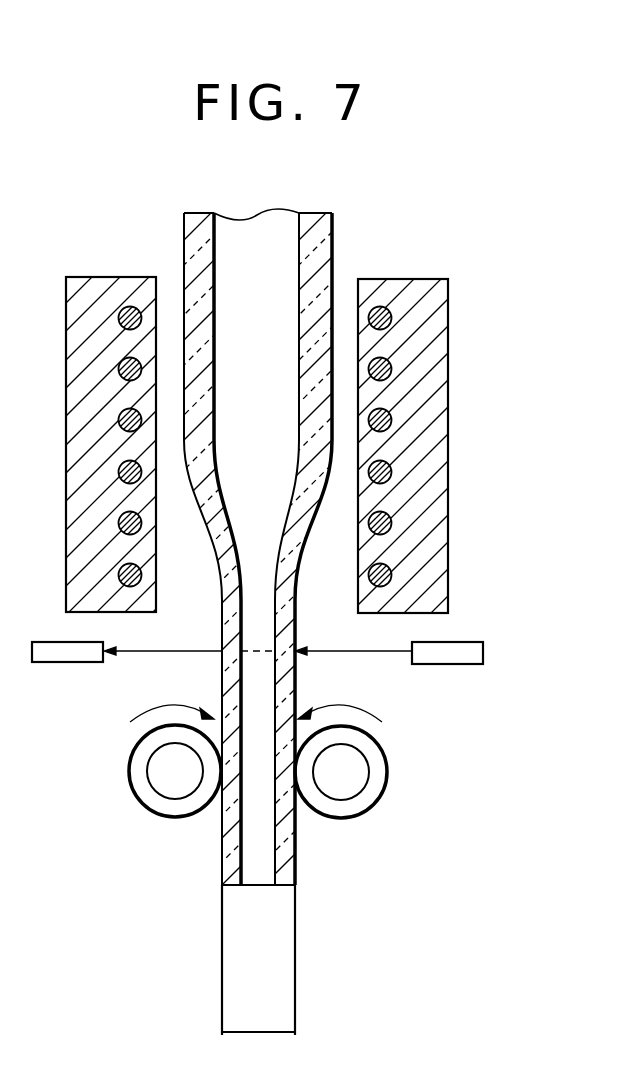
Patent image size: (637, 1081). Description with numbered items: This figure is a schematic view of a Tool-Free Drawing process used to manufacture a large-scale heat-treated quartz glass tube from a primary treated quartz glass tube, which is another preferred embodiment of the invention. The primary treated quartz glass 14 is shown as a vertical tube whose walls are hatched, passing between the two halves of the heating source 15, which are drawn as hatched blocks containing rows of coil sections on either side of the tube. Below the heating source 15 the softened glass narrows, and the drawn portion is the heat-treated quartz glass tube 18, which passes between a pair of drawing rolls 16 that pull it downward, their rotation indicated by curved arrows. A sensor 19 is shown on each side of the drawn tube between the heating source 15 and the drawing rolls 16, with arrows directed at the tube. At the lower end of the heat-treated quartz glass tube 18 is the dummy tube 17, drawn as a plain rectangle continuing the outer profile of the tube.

The primary treated quartz glass 14 is at (318, 540).
The heating source 15 is at (450, 428).
The drawing roll 16 is at (363, 774).
The dummy tube 17 is at (294, 961).
The heat-treated quartz glass tube 18 is at (294, 852).
The sensor 19 is at (483, 652).